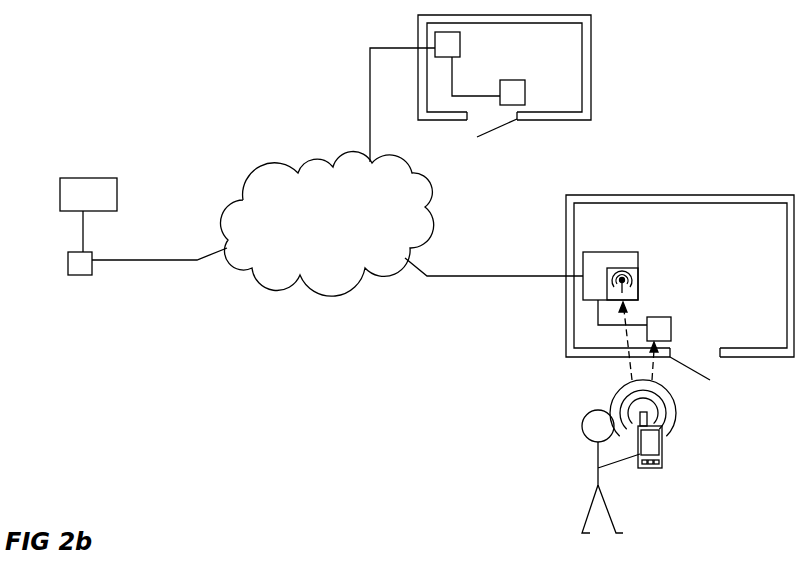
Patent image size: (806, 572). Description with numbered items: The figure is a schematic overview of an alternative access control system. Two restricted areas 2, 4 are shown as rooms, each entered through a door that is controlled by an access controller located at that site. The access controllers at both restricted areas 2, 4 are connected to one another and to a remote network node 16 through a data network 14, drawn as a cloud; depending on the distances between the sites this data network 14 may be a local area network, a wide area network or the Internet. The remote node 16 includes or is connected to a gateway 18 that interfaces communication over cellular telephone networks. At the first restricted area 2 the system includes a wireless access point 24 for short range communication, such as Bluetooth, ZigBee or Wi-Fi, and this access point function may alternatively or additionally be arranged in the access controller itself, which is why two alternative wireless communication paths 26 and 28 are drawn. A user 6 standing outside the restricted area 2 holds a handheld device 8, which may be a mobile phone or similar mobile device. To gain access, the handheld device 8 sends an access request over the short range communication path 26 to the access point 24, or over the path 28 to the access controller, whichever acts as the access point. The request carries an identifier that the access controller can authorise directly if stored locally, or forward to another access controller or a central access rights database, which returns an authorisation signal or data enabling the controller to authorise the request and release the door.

The restricted area 2 is at (653, 210).
The restricted area 4 is at (575, 72).
The user 6 is at (592, 445).
The handheld device 8 is at (658, 445).
The data network 14 is at (430, 183).
The remote network node 16 is at (102, 178).
The gateway 18 is at (82, 275).
The wireless access point 24 is at (638, 273).
The short range communication path 26 is at (630, 362).
The short range communication path 28 is at (653, 362).